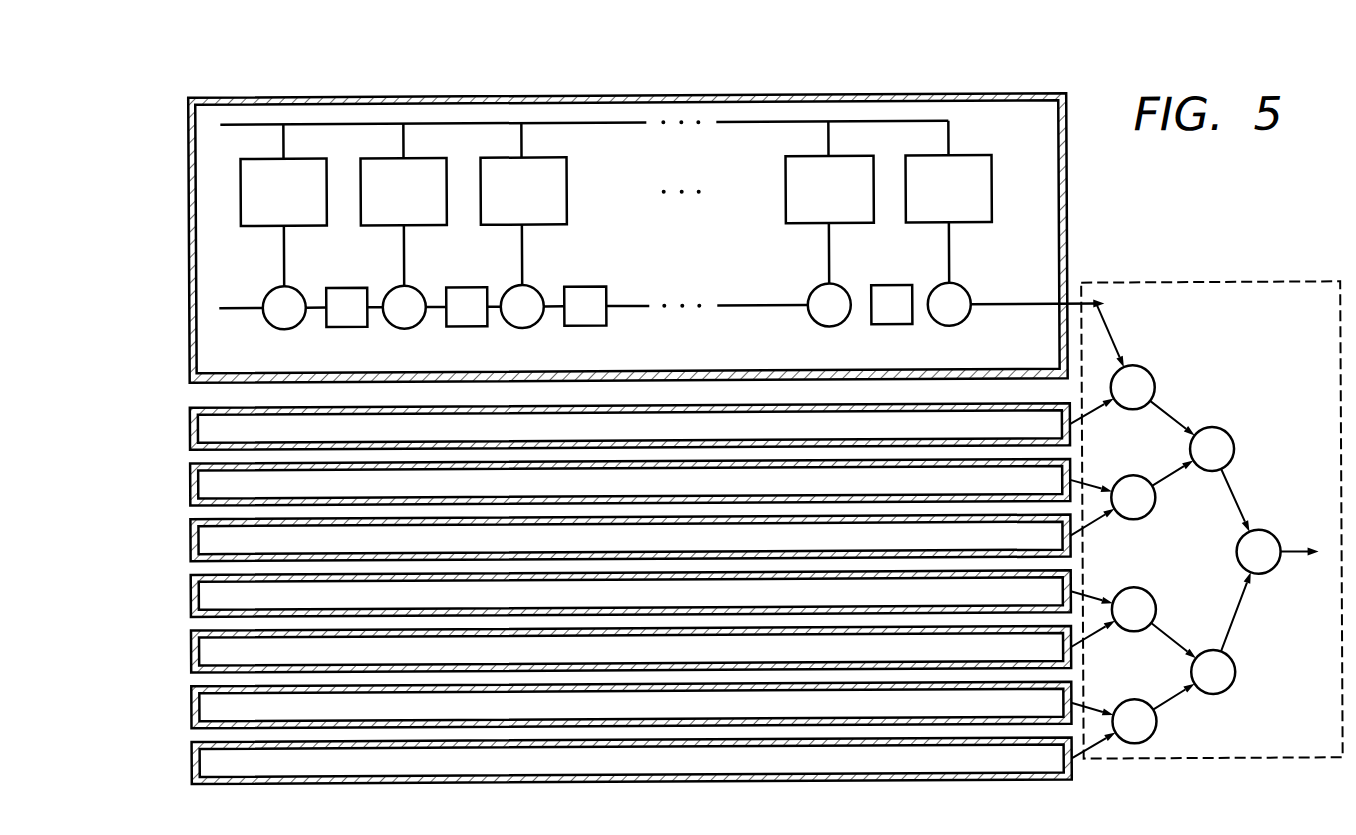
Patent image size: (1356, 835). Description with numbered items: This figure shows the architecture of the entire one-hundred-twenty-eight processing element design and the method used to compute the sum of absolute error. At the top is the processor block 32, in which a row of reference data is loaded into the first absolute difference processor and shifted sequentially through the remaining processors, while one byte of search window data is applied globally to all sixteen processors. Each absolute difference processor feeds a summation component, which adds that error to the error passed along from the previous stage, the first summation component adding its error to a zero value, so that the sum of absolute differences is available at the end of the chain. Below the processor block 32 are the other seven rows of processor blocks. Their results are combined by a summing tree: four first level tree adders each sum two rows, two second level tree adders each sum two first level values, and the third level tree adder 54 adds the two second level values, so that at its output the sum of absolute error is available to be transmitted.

The processor block 32 is at (620, 94).
The third level tree adder 54 is at (1272, 535).